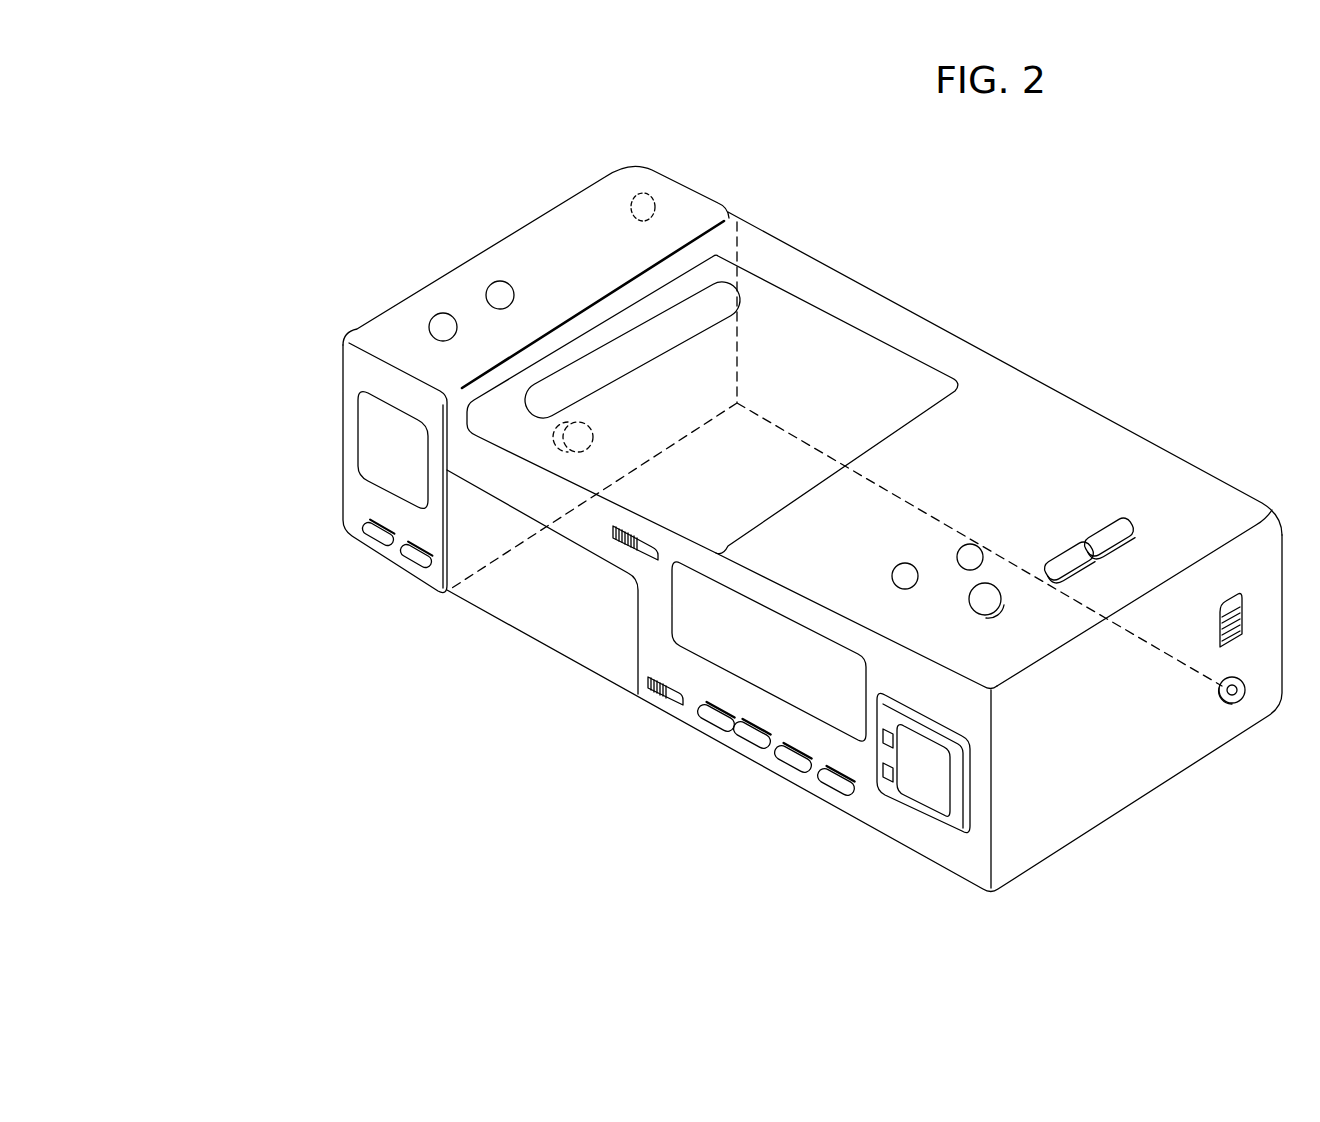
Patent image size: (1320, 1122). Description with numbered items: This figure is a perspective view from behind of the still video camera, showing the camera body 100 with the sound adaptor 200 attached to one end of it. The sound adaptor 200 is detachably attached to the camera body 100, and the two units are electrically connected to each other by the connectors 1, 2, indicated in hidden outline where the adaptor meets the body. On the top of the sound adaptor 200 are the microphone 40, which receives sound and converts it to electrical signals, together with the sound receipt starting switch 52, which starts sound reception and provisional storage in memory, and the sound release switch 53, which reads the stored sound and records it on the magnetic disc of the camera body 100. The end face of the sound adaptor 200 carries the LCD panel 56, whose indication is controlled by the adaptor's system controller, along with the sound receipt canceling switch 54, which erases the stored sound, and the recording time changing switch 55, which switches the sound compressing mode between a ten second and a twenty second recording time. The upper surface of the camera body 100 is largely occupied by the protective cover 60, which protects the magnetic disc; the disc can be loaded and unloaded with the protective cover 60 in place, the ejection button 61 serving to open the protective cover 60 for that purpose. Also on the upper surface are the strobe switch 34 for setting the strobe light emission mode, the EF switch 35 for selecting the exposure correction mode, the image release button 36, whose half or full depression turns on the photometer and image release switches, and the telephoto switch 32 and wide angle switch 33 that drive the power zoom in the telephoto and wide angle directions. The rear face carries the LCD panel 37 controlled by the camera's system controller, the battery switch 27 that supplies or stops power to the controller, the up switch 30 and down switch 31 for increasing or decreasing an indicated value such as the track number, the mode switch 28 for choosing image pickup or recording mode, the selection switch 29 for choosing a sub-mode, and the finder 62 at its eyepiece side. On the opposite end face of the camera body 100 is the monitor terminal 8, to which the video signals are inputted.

The camera body 100 is at (958, 327).
The sound adaptor 200 is at (548, 199).
The protective cover 60 is at (820, 322).
The connector 1 is at (633, 364).
The connector 2 is at (592, 435).
The microphone 40 is at (655, 195).
The sound receipt starting switch 52 is at (489, 281).
The sound release switch 53 is at (429, 327).
The LCD panel 56 is at (358, 432).
The sound receipt canceling switch 54 is at (367, 528).
The recording time changing switch 55 is at (418, 567).
The strobe switch 34 is at (910, 563).
The EF switch 35 is at (984, 553).
The image release button 36 is at (975, 614).
The telephoto switch 32 is at (1058, 548).
The wide angle switch 33 is at (1128, 520).
The LCD panel 37 is at (773, 600).
The ejection button 61 is at (613, 546).
The battery switch 27 is at (650, 703).
The up switch 30 is at (713, 731).
The down switch 31 is at (750, 748).
The mode switch 28 is at (793, 773).
The selection switch 29 is at (833, 795).
The finder 62 is at (912, 805).
The monitor terminal 8 is at (1241, 699).